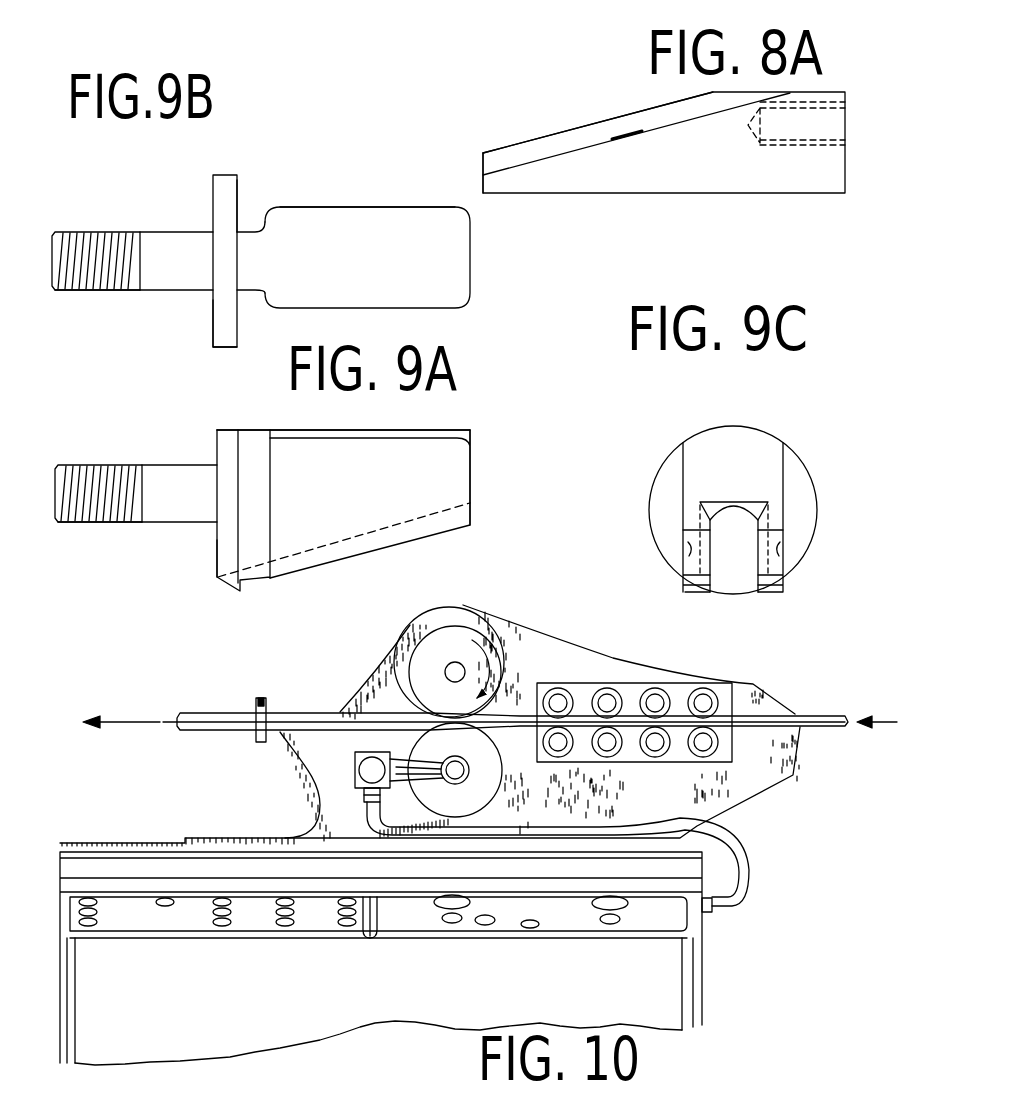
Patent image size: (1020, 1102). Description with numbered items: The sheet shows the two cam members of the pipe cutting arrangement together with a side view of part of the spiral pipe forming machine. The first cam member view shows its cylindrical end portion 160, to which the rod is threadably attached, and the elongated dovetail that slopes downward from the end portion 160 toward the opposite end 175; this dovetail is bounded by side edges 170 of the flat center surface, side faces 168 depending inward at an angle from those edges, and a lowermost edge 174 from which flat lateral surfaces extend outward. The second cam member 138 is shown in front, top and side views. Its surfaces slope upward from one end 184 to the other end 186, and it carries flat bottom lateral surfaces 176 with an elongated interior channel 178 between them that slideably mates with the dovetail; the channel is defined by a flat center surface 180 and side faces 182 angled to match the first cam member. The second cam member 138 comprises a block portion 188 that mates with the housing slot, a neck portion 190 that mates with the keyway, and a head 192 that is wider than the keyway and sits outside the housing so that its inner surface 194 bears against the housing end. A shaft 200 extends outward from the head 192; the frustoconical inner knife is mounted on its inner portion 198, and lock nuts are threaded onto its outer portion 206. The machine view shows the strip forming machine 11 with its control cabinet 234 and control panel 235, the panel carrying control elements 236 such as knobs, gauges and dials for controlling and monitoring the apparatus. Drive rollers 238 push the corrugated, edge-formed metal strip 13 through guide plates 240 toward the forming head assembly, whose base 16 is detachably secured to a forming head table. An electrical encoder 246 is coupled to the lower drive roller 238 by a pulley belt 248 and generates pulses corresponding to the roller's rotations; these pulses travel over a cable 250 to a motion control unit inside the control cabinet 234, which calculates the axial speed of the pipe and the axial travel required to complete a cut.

In FIG. 10, the strip forming machine 11 is at (574, 641).
In FIG. 10, the metal strip 13 is at (167, 720).
In FIG. 10, the base 16 is at (633, 765).
In FIG. 9A, the second cam member 138 is at (434, 423).
In FIG. 8A, the end portion 160 is at (847, 176).
In FIG. 8A, the side faces 168 is at (628, 129).
In FIG. 8A, the side edges 170 is at (578, 127).
In FIG. 8A, the lowermost edge 174 is at (588, 148).
In FIG. 8A, the end 175 is at (483, 182).
In FIG. 9C, the bottom lateral surfaces 176 is at (688, 550).
In FIG. 9C, the interior channel 178 is at (730, 594).
In FIG. 9C, the center surface 180 is at (752, 548).
In FIG. 9C, the side faces 182 is at (733, 501).
In FIG. 9B, the end 184 is at (213, 317).
In FIG. 9A, the end 184 is at (215, 552).
In FIG. 9B, the end 186 is at (472, 233).
In FIG. 9A, the end 186 is at (473, 467).
In FIG. 9B, the block portion 188 is at (387, 205).
In FIG. 9A, the block portion 188 is at (330, 428).
In FIG. 9B, the neck portion 190 is at (256, 228).
In FIG. 9B, the head 192 is at (223, 170).
In FIG. 9A, the head 192 is at (232, 600).
In FIG. 9B, the inner surface 194 is at (240, 187).
In FIG. 9B, the inner portion 198 is at (168, 230).
In FIG. 9A, the inner portion 198 is at (160, 462).
In FIG. 9B, the shaft 200 is at (107, 226).
In FIG. 9A, the shaft 200 is at (110, 458).
In FIG. 9B, the outer portion 206 is at (86, 292).
In FIG. 9A, the outer portion 206 is at (95, 524).
In FIG. 10, the control cabinet 234 is at (668, 985).
In FIG. 10, the control panel 235 is at (675, 918).
In FIG. 10, the control elements 236 is at (347, 930).
In FIG. 10, the drive rollers 238 is at (452, 630).
In FIG. 10, the guide plates 240 is at (283, 711).
In FIG. 10, the electrical encoder 246 is at (372, 751).
In FIG. 10, the pulley belt 248 is at (405, 757).
In FIG. 10, the cable 250 is at (733, 840).